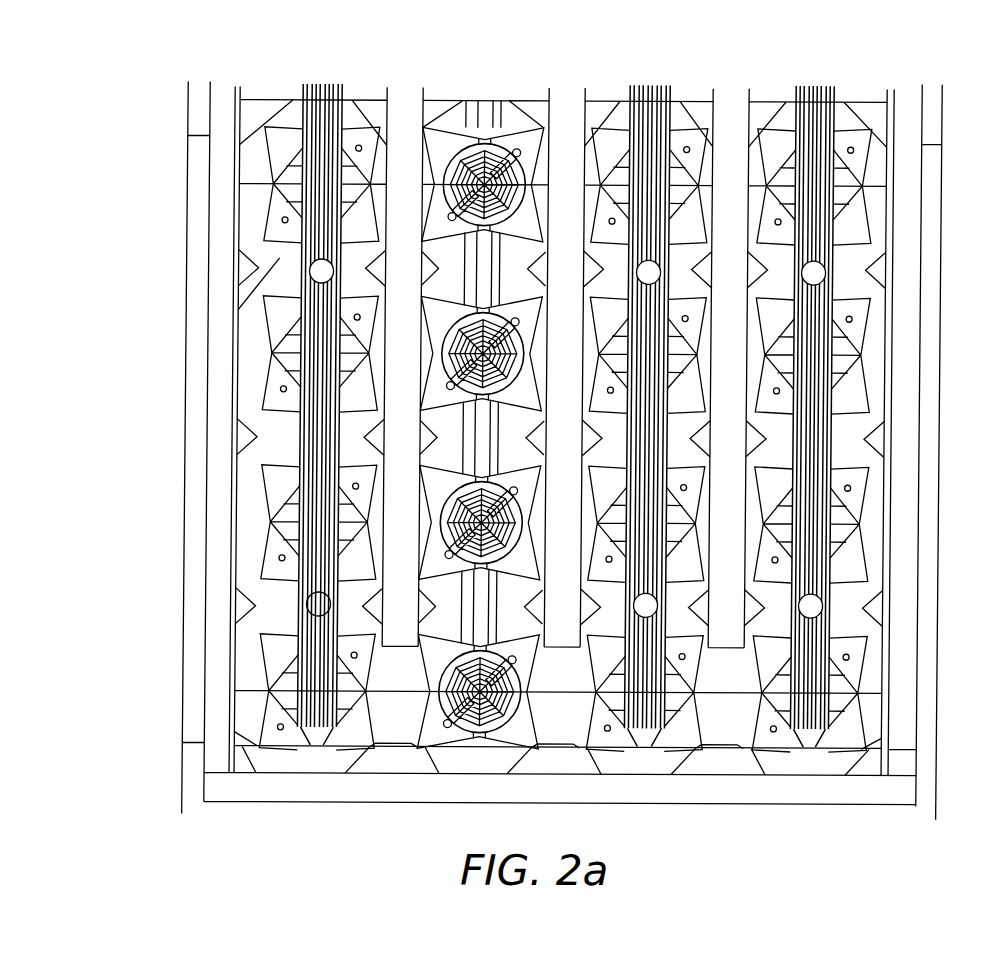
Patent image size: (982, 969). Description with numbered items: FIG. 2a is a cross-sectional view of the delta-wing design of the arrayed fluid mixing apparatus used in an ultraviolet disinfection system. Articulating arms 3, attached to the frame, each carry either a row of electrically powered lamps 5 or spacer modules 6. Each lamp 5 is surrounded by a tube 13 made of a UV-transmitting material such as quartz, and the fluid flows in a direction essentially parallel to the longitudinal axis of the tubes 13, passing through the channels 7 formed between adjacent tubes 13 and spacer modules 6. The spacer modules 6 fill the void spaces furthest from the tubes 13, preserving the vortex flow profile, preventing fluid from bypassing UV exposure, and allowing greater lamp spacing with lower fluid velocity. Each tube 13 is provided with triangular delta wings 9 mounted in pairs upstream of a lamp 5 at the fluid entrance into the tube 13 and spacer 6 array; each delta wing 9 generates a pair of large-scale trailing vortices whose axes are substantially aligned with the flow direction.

The articulating arm 3 is at (316, 86).
The lamp 5 is at (448, 150).
The tube 13 is at (488, 138).
The delta wing 9 is at (272, 148).
The spacer module 6 is at (318, 258).
The channel 7 is at (456, 452).